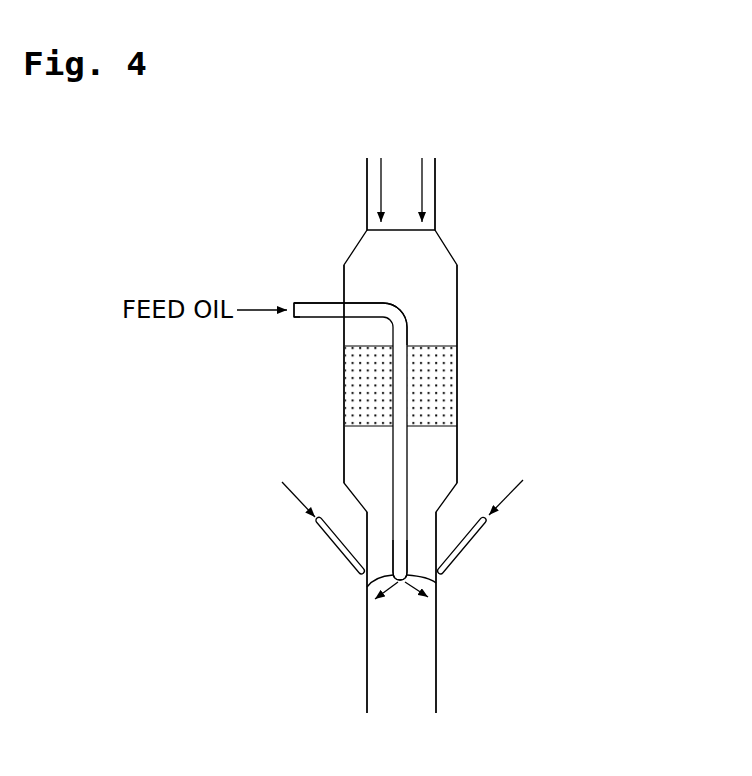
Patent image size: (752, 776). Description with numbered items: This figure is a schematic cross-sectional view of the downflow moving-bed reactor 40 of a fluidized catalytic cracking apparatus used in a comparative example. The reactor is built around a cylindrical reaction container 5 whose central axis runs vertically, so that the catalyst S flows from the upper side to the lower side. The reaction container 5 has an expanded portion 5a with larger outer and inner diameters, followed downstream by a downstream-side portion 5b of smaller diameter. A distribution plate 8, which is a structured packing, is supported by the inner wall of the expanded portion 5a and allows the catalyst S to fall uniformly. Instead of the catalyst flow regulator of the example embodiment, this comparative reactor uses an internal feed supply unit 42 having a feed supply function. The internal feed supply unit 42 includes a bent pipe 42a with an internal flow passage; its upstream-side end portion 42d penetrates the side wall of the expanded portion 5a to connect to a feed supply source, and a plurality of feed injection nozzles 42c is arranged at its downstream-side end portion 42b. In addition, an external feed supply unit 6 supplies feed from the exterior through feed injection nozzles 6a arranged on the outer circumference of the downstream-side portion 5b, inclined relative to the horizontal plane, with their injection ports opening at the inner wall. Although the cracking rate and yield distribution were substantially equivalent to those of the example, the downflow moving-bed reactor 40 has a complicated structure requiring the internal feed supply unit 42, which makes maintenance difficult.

The downflow moving-bed reactor 40 is at (520, 187).
The reaction container 5 is at (503, 248).
The expanded portion 5a is at (457, 290).
The downstream-side portion 5b is at (420, 653).
The external feed supply unit 6 is at (548, 542).
The feed injection nozzle 6a is at (332, 547).
The distribution plate 8 is at (367, 390).
The internal feed supply unit 42 is at (400, 483).
The bent pipe 42a is at (405, 315).
The downstream-side end portion 42b is at (415, 562).
The feed injection nozzle 42c is at (370, 588).
The upstream-side end portion 42d is at (293, 303).
The catalyst S is at (382, 178).